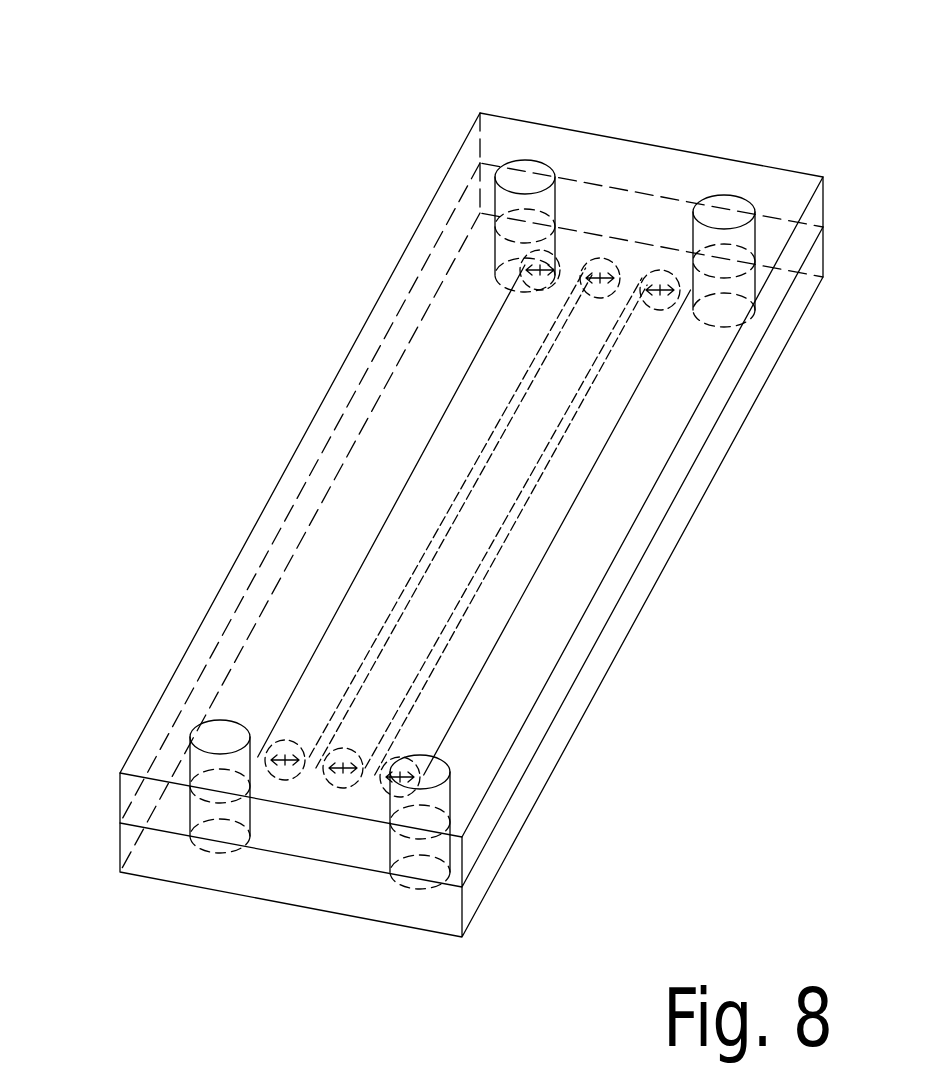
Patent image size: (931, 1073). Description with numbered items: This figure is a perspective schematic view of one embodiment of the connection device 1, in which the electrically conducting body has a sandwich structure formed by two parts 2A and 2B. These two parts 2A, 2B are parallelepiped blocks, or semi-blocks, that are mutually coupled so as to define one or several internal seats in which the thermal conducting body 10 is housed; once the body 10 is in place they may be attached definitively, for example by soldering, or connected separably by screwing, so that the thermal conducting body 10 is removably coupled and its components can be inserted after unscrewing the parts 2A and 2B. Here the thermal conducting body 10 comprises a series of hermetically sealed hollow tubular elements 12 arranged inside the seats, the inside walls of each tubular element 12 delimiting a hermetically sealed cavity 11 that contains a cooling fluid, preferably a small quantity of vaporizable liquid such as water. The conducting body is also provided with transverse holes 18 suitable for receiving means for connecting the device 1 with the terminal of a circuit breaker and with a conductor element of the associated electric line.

The connection device 1 is at (703, 573).
The part of the electro-conducting body 2A is at (128, 787).
The part of the electro-conducting body 2B is at (185, 868).
The thermal conducting body 10 is at (372, 505).
The hermetically sealed cavity 11 is at (353, 628).
The hermetically-sealed hollow tubular element 12 is at (431, 446).
The transverse holes 18 is at (525, 182).